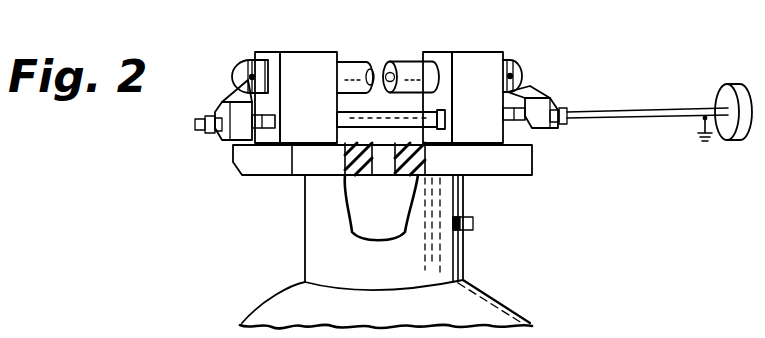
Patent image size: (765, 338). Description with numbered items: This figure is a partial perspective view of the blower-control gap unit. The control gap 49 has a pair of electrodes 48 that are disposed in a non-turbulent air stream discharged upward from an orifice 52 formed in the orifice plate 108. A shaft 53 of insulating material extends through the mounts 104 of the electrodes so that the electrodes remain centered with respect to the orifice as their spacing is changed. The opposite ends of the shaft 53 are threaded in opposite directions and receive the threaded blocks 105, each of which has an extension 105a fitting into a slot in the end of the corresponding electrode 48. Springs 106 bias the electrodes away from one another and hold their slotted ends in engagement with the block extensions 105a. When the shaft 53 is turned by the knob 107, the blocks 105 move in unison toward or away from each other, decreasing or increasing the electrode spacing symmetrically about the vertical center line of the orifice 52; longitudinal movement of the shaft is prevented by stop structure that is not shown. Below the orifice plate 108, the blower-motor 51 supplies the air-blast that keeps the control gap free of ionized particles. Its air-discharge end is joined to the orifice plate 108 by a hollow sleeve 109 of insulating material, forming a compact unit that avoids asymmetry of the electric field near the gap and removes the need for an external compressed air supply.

The electrodes 48 is at (370, 71).
The control gap 49 is at (522, 240).
The blower-motor 51 is at (488, 298).
The orifice 52 is at (386, 173).
The shaft 53 is at (383, 120).
The mounts 104 is at (323, 53).
The threaded blocks 105 is at (227, 136).
The extension 105a is at (230, 95).
The springs 106 is at (255, 56).
The knob 107 is at (725, 92).
The orifice plate 108 is at (302, 168).
The hollow sleeve 109 is at (463, 197).